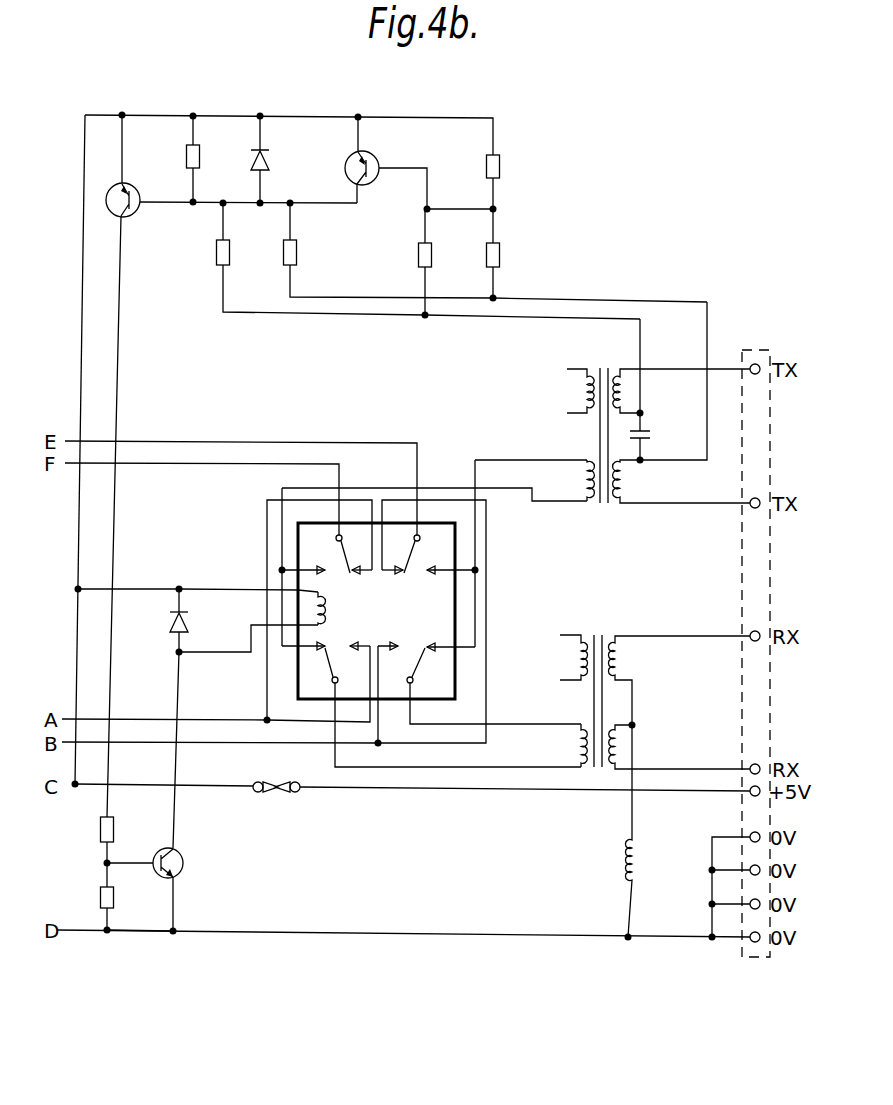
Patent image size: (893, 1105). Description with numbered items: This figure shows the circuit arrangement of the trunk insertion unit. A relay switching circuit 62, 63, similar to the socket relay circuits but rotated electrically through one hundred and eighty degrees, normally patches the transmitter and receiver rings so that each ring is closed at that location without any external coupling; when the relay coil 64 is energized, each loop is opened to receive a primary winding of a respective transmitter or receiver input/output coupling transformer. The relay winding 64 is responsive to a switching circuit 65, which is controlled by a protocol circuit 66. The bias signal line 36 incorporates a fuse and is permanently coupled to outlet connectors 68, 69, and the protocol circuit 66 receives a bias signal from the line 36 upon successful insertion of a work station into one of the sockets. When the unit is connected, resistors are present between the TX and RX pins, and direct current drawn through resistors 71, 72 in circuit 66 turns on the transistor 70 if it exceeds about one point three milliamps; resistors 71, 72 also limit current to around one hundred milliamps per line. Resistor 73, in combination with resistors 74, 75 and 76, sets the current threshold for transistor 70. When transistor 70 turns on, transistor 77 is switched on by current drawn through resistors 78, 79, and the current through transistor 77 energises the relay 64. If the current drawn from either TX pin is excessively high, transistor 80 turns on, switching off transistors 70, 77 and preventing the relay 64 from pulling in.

The protocol circuit 66 is at (443, 132).
The transistor 70 is at (127, 215).
The resistor 71 is at (216, 254).
The resistor 72 is at (283, 254).
The resistor 73 is at (186, 158).
The resistor 74 is at (418, 254).
The resistor 75 is at (500, 167).
The resistor 76 is at (500, 262).
The transistor 80 is at (347, 163).
The relay switching circuit 62 is at (428, 620).
The relay switching circuit 63 is at (368, 620).
The relay coil 64 is at (330, 625).
The transistor 77 is at (184, 861).
The resistor 78 is at (114, 831).
The resistor 79 is at (114, 900).
The bias signal line 36 is at (65, 790).
The switching circuit 65 is at (134, 926).
The outlet connector 68 is at (750, 796).
The outlet connector 69 is at (745, 957).